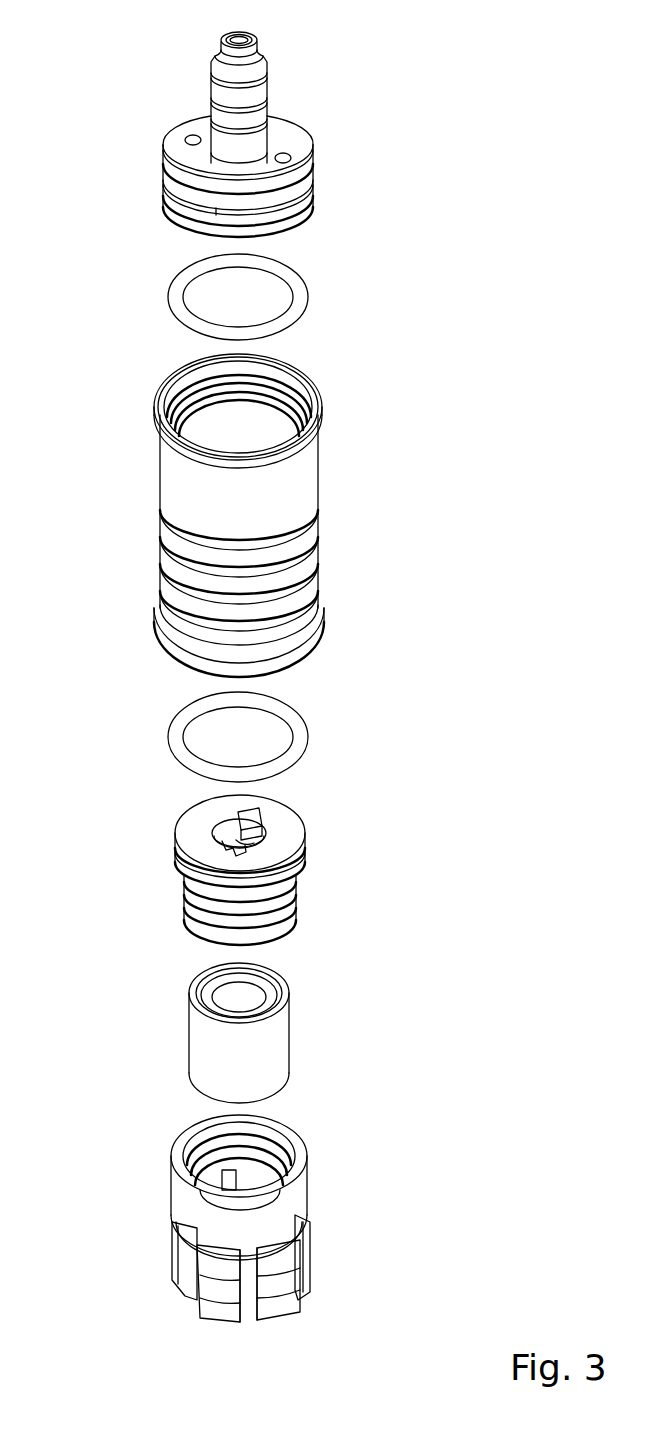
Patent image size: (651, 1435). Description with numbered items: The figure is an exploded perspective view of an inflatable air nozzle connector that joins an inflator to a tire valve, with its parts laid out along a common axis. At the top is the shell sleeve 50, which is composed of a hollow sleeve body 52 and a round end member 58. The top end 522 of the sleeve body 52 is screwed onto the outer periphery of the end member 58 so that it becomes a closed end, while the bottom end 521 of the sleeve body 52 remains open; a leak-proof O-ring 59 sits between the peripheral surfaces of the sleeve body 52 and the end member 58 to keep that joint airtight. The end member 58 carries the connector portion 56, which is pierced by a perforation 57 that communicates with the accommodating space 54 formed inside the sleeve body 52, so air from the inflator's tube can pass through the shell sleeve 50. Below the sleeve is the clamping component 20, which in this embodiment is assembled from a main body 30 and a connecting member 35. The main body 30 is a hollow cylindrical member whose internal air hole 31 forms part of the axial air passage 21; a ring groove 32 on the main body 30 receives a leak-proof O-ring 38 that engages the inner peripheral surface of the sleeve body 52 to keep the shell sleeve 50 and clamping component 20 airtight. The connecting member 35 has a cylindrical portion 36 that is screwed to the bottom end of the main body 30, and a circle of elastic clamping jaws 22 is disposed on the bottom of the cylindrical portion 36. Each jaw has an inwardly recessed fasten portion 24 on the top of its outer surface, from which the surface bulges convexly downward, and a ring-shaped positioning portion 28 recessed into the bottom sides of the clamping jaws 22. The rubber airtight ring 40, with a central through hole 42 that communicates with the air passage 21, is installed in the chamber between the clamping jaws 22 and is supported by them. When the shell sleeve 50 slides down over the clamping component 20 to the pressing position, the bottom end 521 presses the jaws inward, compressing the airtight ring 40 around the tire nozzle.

The clamping component 20 is at (364, 822).
The air passage 21 is at (210, 840).
The clamping jaws 22 is at (215, 1290).
The fasten portion 24 is at (308, 1258).
The positioning portion 28 is at (280, 1300).
The main body 30 is at (322, 873).
The air hole 31 is at (225, 828).
The ring groove 32 is at (195, 900).
The connecting member 35 is at (323, 1154).
The cylindrical portion 36 is at (185, 1193).
The leak-proof element (O-ring) 38 is at (297, 716).
The airtight ring 40 is at (302, 1014).
The through hole 42 is at (229, 1002).
The shell sleeve 50 is at (357, 430).
The sleeve body 52 is at (305, 480).
The accommodating space 54 is at (258, 432).
The connector portion 56 is at (268, 92).
The perforation 57 is at (235, 42).
The end member 58 is at (295, 143).
The leak-proof element (O-ring) 59 is at (300, 290).
The bottom end 521 is at (156, 645).
The top end 522 is at (158, 412).